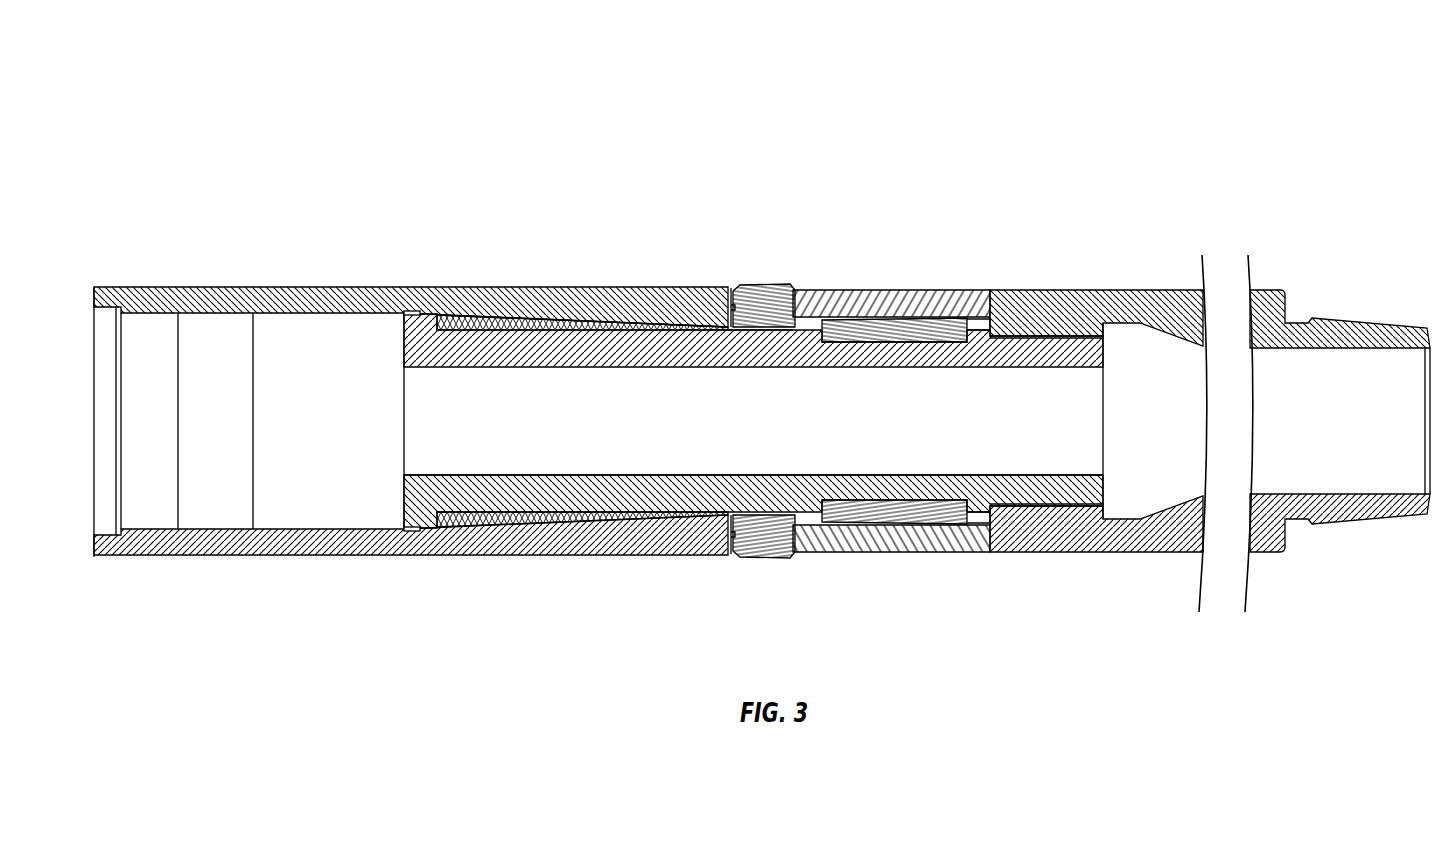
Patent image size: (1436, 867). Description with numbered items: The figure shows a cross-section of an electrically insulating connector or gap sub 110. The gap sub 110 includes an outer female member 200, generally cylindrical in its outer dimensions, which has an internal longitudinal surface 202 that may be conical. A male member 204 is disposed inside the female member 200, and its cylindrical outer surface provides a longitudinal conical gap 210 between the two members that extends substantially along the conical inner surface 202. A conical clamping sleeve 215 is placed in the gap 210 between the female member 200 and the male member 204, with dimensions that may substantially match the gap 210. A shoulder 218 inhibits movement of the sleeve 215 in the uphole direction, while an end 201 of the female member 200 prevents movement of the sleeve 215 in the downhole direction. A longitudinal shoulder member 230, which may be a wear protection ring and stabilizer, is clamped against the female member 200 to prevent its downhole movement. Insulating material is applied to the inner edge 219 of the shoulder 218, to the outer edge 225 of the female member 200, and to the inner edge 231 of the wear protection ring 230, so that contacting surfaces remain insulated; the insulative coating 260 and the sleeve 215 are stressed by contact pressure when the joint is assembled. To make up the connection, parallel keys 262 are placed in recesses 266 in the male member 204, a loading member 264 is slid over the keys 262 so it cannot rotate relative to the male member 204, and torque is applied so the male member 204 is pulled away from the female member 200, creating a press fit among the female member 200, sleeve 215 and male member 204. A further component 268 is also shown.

The insulating connector or gap sub 110 is at (533, 72).
The outer female member 200 is at (455, 548).
The end of the female member 201 is at (545, 335).
The internal longitudinal surface 202 is at (575, 520).
The male member 204 is at (505, 495).
The longitudinal conical gap 210 is at (635, 508).
The conical sleeve 215 is at (441, 320).
The shoulder 218 is at (440, 512).
The inner edge of the shoulder 219 is at (436, 314).
The outer edge of the female member 225 is at (732, 300).
The longitudinal shoulder member 230 is at (752, 335).
The inner edge of the wear protection ring 231 is at (745, 288).
The insulative coating 260 is at (500, 328).
The parallel keys 262 is at (840, 330).
The loading member 264 is at (735, 540).
The recesses 266 is at (977, 335).
The coupling 268 is at (1085, 298).